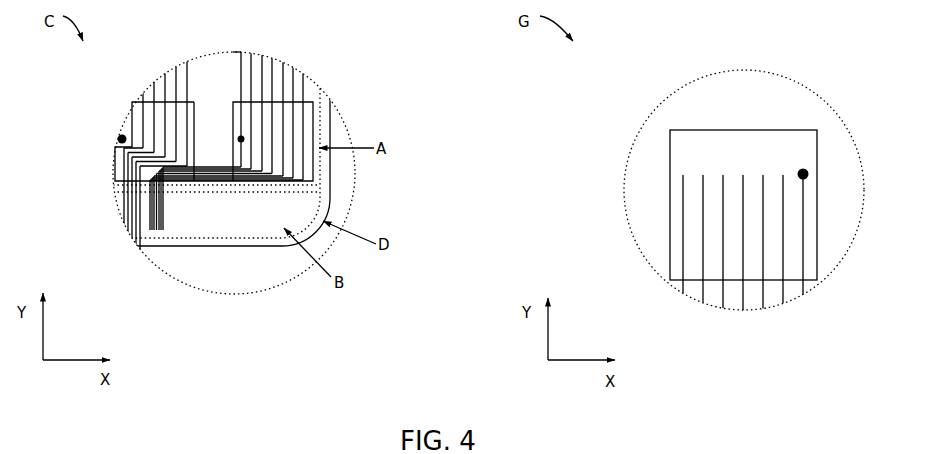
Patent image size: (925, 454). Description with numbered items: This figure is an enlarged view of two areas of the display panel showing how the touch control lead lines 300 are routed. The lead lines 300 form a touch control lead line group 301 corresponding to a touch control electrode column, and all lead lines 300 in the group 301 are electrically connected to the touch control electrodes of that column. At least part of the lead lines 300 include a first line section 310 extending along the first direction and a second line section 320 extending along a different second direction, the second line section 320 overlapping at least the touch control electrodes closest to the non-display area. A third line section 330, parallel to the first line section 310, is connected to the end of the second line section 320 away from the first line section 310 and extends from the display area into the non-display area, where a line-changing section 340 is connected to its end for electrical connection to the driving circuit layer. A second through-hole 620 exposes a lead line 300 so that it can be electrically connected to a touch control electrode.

The touch control lead line 300 is at (242, 74).
The touch control lead line group 301 is at (568, 142).
The first line section 310 is at (240, 87).
The second line section 320 is at (207, 163).
The third line section 330 is at (138, 177).
The line-changing section 340 is at (138, 210).
The second through-hole 620 is at (118, 141).